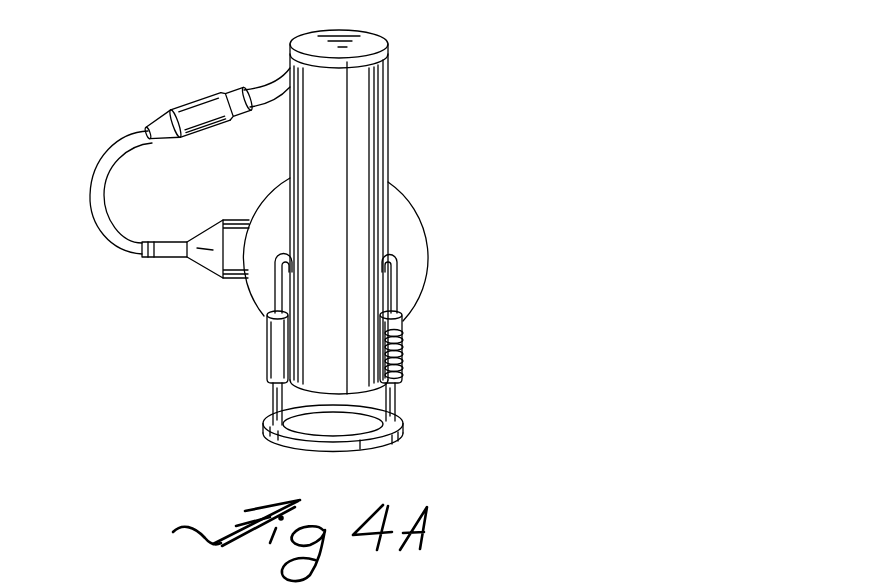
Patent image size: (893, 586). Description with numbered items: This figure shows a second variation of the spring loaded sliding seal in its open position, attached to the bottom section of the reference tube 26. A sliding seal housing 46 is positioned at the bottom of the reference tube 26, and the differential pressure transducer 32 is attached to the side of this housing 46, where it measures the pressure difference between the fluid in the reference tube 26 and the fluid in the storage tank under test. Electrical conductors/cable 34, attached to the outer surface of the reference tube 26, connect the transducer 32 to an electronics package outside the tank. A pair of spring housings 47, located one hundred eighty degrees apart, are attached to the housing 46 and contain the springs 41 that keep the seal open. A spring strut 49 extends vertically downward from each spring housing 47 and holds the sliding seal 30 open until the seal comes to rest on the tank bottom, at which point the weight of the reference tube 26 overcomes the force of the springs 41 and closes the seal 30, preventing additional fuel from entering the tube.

The reference tube 26 is at (440, 92).
The sliding seal housing 46 is at (388, 229).
The differential pressure transducer 32 is at (250, 293).
The electrical conductors/cable 34 is at (193, 104).
The spring housing 47 is at (403, 323).
The spring strut 49 is at (400, 408).
The spring 41 is at (403, 352).
The sliding seal 30 is at (302, 449).